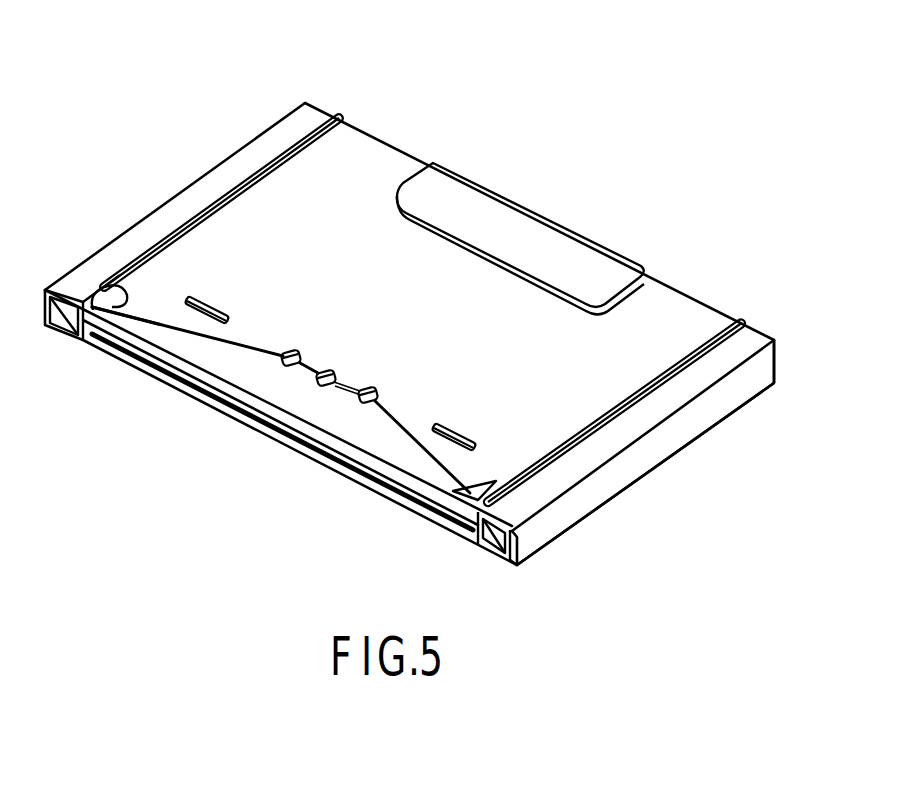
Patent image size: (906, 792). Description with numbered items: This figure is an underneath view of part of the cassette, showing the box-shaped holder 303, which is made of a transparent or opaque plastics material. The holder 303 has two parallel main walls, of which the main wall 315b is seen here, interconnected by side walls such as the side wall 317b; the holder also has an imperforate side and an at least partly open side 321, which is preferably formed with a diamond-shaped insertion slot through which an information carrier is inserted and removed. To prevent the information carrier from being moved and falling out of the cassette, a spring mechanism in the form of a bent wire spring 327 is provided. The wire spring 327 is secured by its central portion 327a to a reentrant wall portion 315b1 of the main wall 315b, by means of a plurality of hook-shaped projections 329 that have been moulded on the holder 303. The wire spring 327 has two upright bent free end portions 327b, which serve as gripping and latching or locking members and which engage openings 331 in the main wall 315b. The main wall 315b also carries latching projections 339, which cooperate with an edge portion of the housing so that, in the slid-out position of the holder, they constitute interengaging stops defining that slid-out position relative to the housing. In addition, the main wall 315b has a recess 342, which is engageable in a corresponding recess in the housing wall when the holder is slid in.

The holder 303 is at (317, 102).
The openings 331 is at (125, 290).
The latching projections 339 is at (207, 299).
The hook-shaped projections 329 is at (328, 368).
The bent wire spring 327 is at (393, 418).
The central portion 327a is at (348, 380).
The upright bent free end portions 327b is at (112, 345).
The at least partly open side 321 is at (385, 478).
The recess 342 is at (525, 225).
The reentrant wall portion 315b1 is at (658, 315).
The main wall 315b is at (743, 348).
The side wall 317b is at (675, 438).